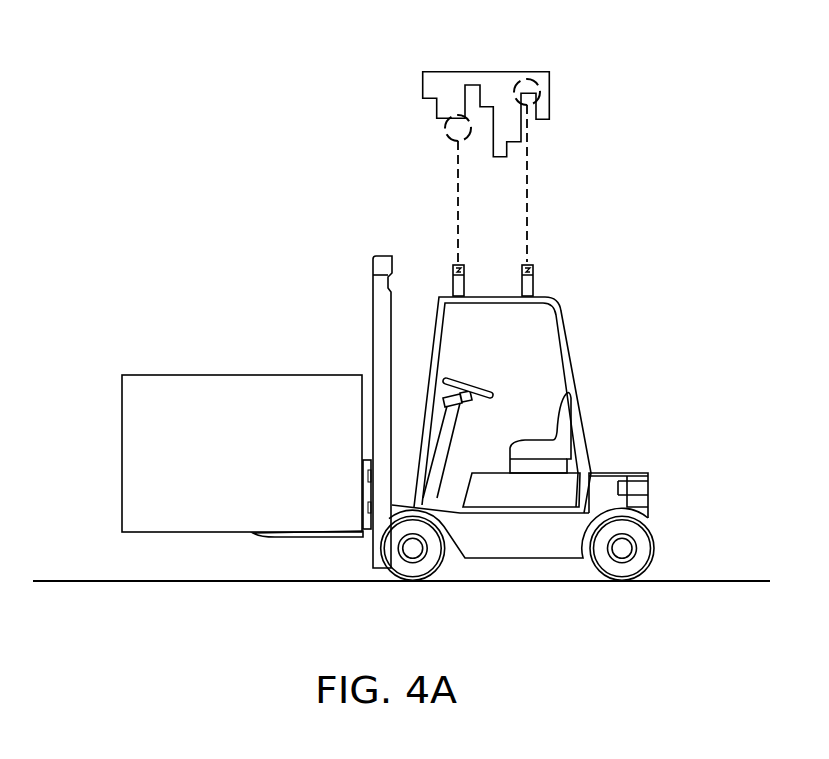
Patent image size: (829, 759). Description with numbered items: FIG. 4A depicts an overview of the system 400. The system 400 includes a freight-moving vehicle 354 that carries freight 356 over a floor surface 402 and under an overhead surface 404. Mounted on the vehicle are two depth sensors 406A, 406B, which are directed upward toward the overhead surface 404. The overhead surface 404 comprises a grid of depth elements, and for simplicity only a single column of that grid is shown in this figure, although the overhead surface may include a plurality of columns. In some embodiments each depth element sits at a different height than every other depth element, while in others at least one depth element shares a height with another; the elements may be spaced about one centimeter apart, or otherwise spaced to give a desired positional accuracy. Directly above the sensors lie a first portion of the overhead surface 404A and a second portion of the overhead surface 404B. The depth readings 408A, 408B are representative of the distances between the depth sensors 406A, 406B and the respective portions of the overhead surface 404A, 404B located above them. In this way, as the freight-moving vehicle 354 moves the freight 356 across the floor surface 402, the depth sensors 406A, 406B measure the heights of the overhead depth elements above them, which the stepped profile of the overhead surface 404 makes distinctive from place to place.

The system 400 is at (160, 139).
The floor surface 402 is at (664, 582).
The overhead surface 404 is at (422, 84).
The first portion of the overhead surface 404A is at (442, 125).
The second portion of the overhead surface 404B is at (541, 93).
The depth sensor 406A is at (452, 282).
The depth sensor 406B is at (535, 280).
The depth reading 408A is at (456, 185).
The depth reading 408B is at (529, 185).
The freight-moving vehicle 354 is at (648, 500).
The freight 356 is at (242, 375).